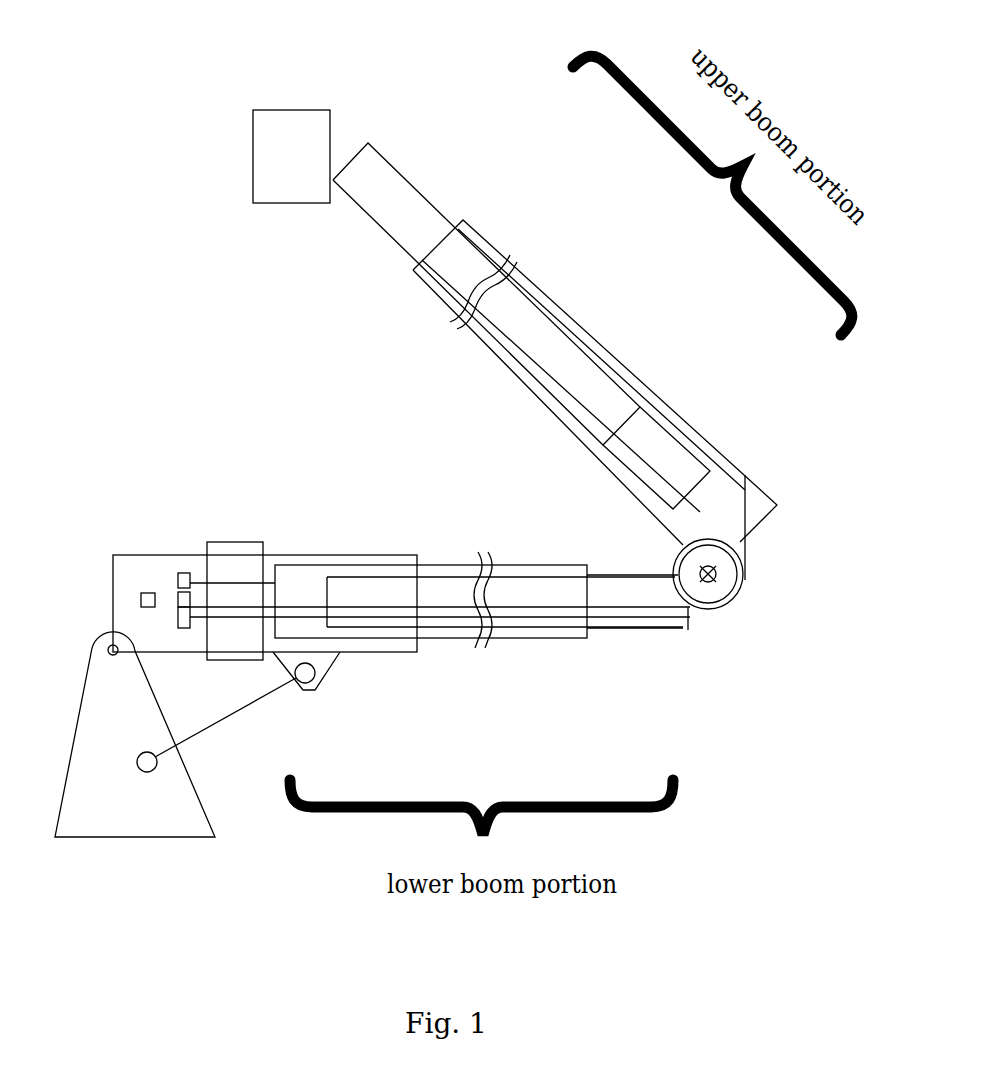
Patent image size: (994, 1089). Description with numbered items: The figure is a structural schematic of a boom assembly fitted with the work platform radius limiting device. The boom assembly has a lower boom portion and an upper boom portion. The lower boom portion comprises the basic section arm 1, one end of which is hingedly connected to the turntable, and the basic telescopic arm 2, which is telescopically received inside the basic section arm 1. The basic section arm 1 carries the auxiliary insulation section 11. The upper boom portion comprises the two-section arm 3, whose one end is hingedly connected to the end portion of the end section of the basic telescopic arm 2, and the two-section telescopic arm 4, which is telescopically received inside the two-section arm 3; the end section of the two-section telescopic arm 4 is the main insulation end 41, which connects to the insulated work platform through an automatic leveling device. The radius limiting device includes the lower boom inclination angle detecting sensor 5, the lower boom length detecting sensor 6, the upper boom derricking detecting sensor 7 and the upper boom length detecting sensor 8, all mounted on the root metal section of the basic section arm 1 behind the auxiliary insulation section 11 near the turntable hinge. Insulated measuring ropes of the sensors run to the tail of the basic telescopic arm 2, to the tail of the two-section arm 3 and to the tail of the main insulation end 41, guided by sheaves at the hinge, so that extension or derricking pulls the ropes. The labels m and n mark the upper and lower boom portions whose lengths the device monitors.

The basic section arm 1 is at (340, 560).
The auxiliary insulation section 11 is at (237, 557).
The basic telescopic arm 2 is at (507, 633).
The two-section arm 3 is at (657, 383).
The two-section telescopic arm 4 is at (523, 287).
The main insulation end 41 is at (377, 165).
The lower boom inclination angle detecting sensor 5 is at (142, 595).
The lower boom length detecting sensor 6 is at (185, 583).
The upper boom derricking detecting sensor 7 is at (180, 610).
The upper boom length detecting sensor 8 is at (180, 592).
The upper boom length m is at (417, 227).
The lower boom length n is at (608, 630).